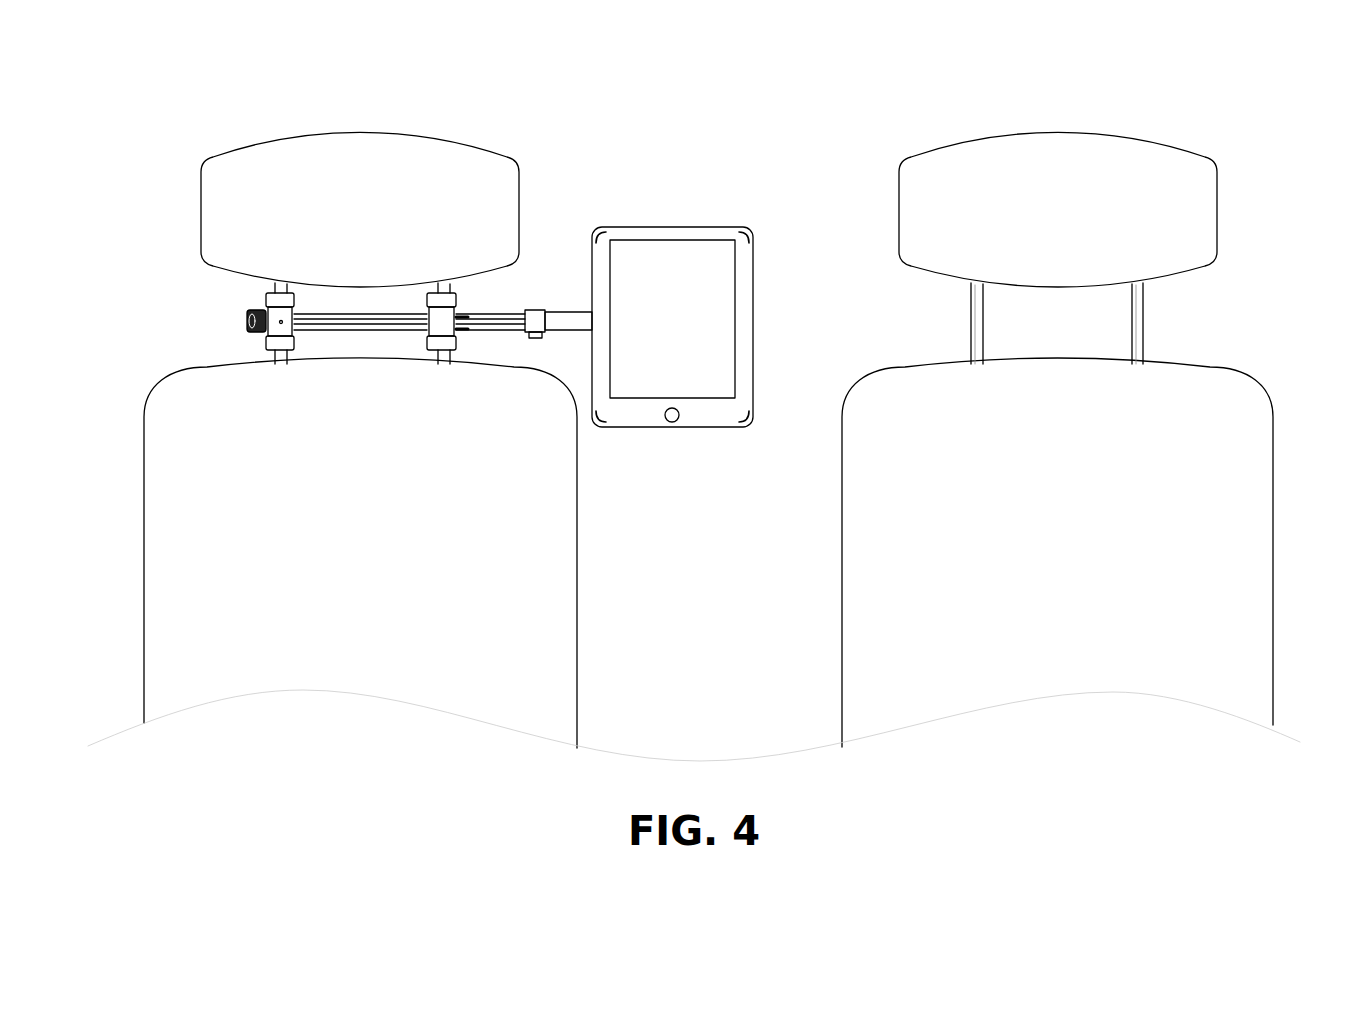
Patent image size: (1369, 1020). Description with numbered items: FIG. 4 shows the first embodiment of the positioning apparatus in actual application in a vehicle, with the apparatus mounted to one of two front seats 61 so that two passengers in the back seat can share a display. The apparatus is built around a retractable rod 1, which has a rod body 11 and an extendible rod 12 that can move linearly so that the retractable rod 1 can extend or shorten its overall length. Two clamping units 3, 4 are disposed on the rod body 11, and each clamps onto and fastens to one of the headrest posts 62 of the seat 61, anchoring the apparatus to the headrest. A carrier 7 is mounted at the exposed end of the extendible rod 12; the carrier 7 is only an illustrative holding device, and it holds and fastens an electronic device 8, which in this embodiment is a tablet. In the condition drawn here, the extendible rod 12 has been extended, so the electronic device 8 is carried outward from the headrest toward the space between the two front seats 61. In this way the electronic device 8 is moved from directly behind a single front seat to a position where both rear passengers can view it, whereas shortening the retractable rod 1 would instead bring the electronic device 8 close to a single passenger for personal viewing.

The retractable rod 1 is at (564, 205).
The rod body 11 is at (508, 317).
The extendible rod 12 is at (575, 323).
The clamping unit 3 is at (273, 330).
The clamping unit 4 is at (438, 318).
The carrier 7 is at (695, 273).
The electronic device 8 is at (698, 272).
The seat 61 is at (214, 470).
The headrest post 62 is at (279, 286).